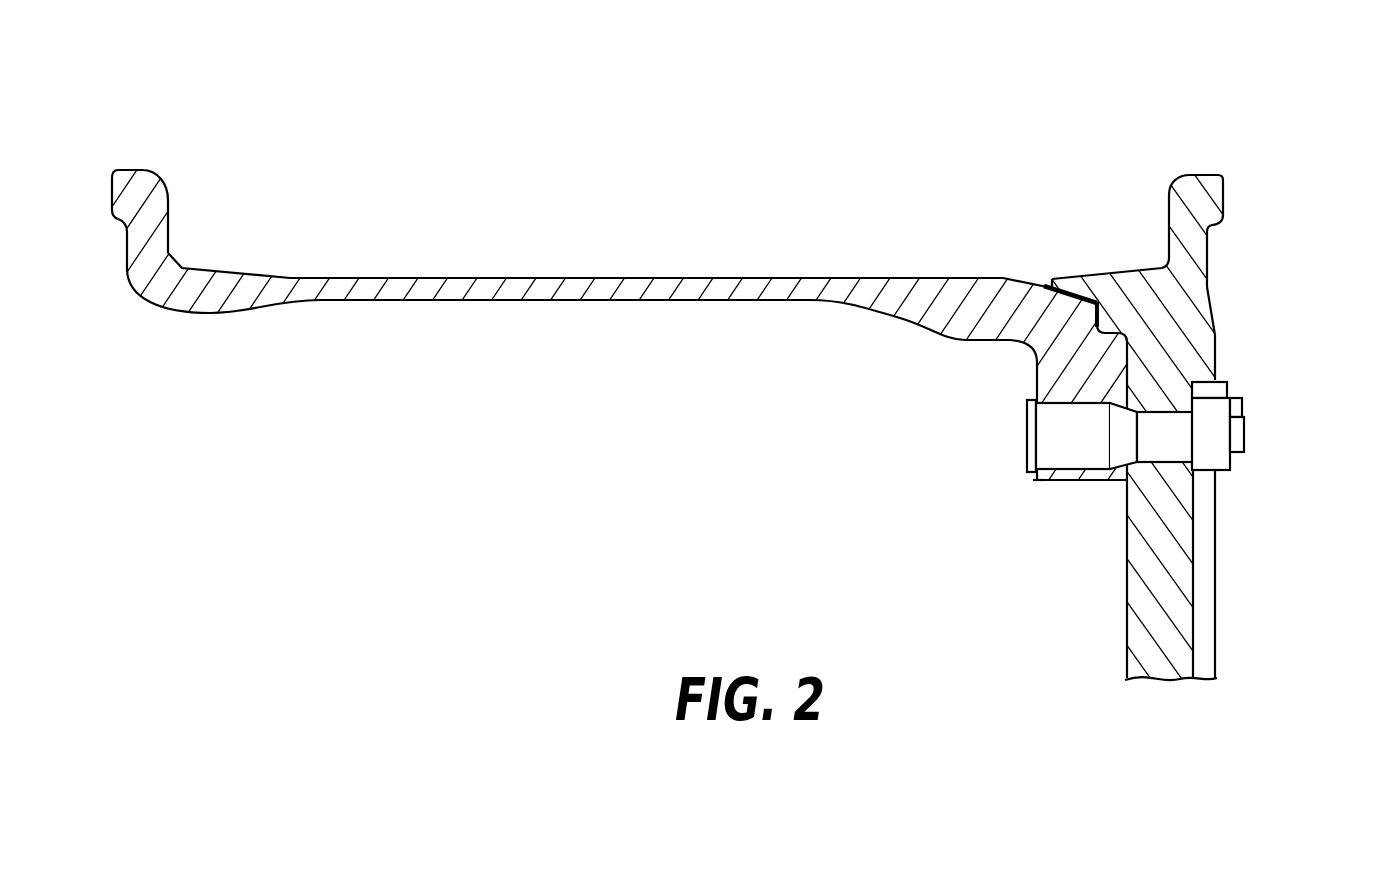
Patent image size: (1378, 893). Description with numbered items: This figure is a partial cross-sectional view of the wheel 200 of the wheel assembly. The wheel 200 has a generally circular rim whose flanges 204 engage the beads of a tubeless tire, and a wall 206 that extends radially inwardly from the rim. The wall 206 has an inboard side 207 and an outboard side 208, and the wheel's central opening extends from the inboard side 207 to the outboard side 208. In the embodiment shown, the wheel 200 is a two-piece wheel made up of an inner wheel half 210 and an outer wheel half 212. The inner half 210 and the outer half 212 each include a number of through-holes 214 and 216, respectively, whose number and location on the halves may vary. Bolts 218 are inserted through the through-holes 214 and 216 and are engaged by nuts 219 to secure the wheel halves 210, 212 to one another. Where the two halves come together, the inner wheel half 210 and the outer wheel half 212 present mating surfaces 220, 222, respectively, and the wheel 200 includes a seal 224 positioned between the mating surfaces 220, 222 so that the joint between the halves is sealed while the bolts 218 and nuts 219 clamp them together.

The wheel 200 is at (331, 192).
The flanges 204 is at (130, 168).
The wall 206 is at (1197, 643).
The inboard side 207 is at (1028, 480).
The outboard side 208 is at (1218, 358).
The inner wheel half 210 is at (497, 302).
The outer wheel half 212 is at (1197, 250).
The through-holes 214 is at (1028, 433).
The through-holes 216 is at (1178, 442).
The bolts 218 is at (1245, 427).
The nuts 219 is at (1217, 413).
The mating surface 220 is at (1060, 297).
The mating surface 222 is at (1097, 300).
The seal 224 is at (1100, 335).